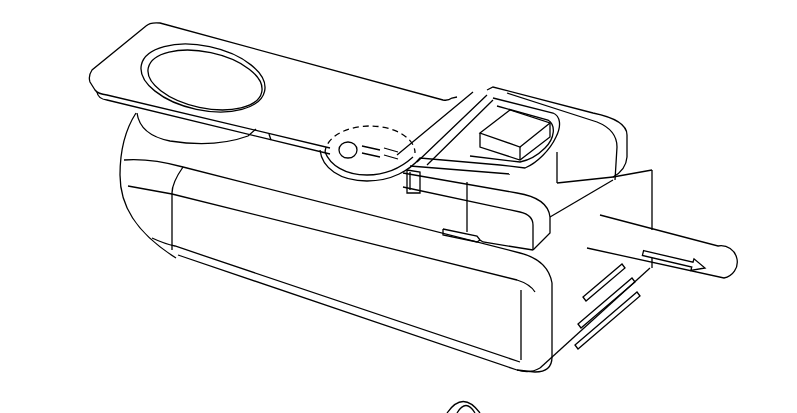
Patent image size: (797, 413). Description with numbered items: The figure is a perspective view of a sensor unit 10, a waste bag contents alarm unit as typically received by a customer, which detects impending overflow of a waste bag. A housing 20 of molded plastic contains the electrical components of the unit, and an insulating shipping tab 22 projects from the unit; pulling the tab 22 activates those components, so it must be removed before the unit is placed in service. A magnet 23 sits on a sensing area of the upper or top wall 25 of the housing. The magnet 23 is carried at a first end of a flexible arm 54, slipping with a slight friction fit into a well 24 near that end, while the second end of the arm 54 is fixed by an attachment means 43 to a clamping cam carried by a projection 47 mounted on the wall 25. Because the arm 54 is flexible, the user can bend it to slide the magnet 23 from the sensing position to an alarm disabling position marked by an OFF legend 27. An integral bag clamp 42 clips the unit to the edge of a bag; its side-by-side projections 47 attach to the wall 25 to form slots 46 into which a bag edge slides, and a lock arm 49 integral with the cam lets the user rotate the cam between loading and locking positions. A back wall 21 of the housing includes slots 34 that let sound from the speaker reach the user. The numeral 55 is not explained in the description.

The sensor unit 10 is at (70, 211).
The housing 20 is at (355, 287).
The back wall 21 is at (562, 312).
The insulating shipping tab 22 is at (717, 263).
The magnet 23 is at (265, 69).
The well 24 is at (199, 77).
The upper or top wall 25 is at (340, 408).
The OFF legend 27 is at (350, 178).
The slots 34 is at (608, 276).
The bag clamp 42 is at (600, 93).
The attachment means 43 is at (518, 128).
The slots 46 is at (450, 230).
The projections 47 is at (533, 208).
The lock arm 49 is at (410, 180).
The flexible arm 54 is at (146, 26).
The pedestal 55 is at (135, 113).